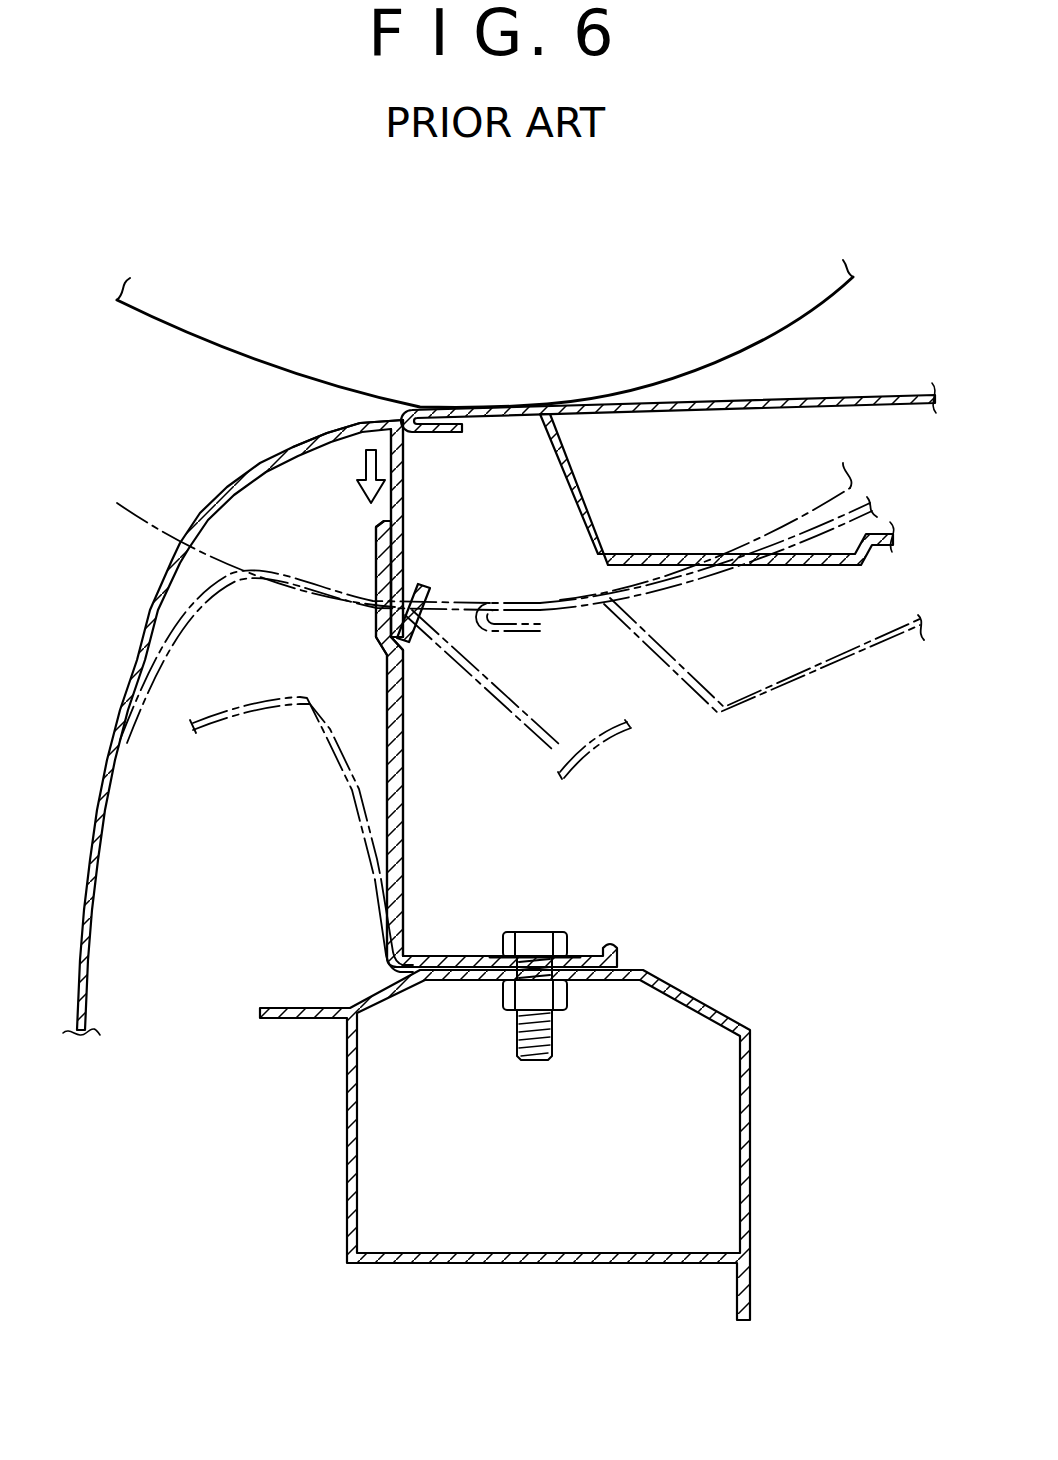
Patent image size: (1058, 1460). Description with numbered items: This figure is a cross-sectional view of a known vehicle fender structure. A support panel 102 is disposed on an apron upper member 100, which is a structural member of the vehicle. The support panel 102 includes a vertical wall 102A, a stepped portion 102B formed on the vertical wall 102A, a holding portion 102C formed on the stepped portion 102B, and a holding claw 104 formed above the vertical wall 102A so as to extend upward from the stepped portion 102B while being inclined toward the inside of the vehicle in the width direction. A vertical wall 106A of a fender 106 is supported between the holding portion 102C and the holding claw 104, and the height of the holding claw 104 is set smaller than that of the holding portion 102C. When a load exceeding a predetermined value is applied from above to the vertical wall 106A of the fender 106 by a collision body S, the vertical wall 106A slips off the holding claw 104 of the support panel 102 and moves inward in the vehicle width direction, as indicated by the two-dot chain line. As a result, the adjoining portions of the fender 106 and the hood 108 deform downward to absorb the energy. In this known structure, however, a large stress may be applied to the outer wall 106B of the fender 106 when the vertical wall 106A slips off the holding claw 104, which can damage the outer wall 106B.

The collision body S is at (157, 327).
The apron upper member 100 is at (753, 1118).
The support panel 102 is at (355, 779).
The vertical wall 102A is at (405, 745).
The stepped portion 102B is at (377, 637).
The holding portion 102C is at (377, 530).
The holding claw 104 is at (427, 600).
The fender 106 is at (250, 465).
The vertical wall 106A is at (397, 513).
The outer wall 106B is at (325, 432).
The hood 108 is at (860, 393).